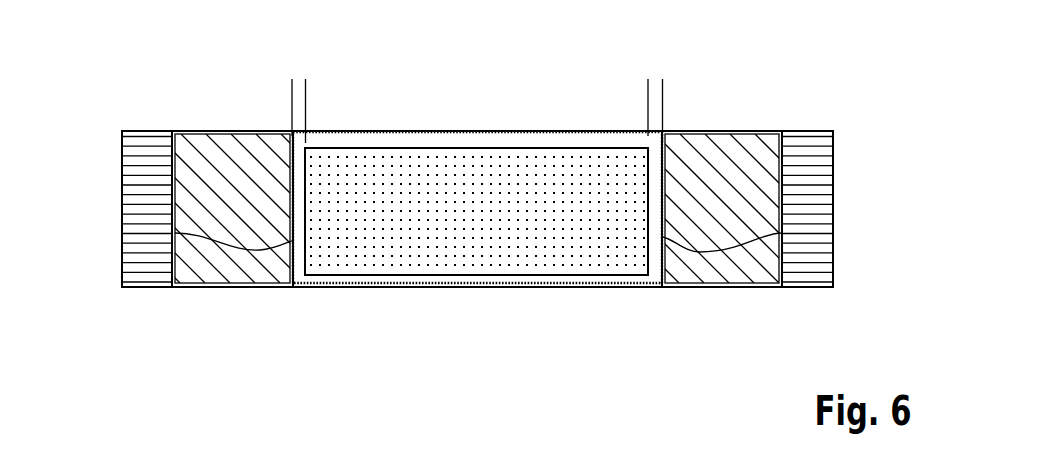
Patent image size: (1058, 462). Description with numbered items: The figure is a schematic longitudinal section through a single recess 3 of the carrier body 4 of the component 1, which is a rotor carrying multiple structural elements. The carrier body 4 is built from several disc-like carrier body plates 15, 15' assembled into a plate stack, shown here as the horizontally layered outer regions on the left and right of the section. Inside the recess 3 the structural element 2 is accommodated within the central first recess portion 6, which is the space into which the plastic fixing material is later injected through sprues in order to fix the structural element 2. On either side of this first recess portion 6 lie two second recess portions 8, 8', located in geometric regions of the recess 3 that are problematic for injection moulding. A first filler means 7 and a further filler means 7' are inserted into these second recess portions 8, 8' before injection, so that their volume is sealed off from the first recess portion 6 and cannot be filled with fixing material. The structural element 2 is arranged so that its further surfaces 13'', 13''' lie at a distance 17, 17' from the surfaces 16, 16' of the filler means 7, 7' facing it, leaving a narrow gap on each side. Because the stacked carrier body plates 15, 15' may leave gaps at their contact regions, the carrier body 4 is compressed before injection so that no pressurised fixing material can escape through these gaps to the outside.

The component 1 is at (810, 69).
The structural element 2 is at (438, 173).
The recess 3 is at (173, 375).
The carrier body 4 is at (922, 117).
The first recess portion 6 is at (487, 288).
The filler means 7 is at (230, 162).
The further filler means 7' is at (704, 162).
The second recess portion 8 is at (232, 352).
The second recess portion 8' is at (724, 352).
The further surface of the structural element 13'' is at (173, 241).
The further surface of the structural element 13''' is at (788, 240).
The carrier body plate 15 is at (516, 200).
The carrier body plate 15' is at (518, 209).
The surface of the filler means 16 is at (341, 139).
The surface of the further filler means 16' is at (613, 139).
The distance 17 is at (298, 83).
The distance 17' is at (656, 83).